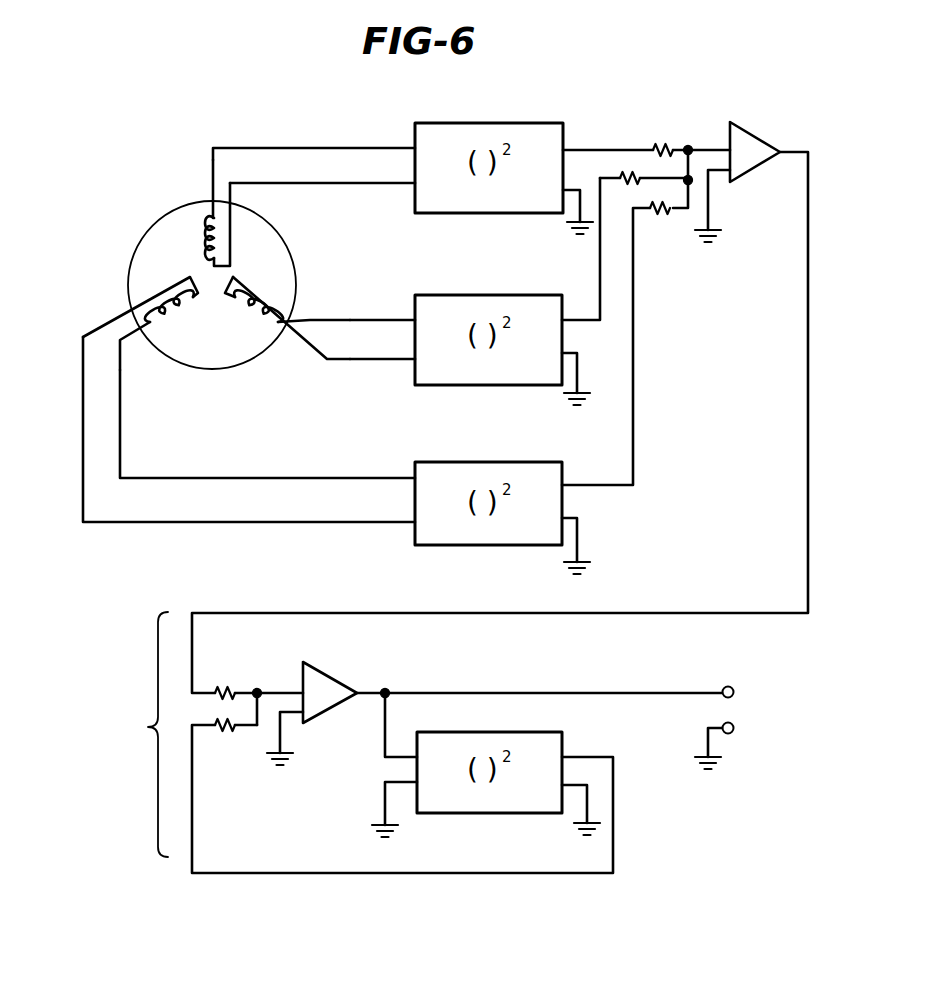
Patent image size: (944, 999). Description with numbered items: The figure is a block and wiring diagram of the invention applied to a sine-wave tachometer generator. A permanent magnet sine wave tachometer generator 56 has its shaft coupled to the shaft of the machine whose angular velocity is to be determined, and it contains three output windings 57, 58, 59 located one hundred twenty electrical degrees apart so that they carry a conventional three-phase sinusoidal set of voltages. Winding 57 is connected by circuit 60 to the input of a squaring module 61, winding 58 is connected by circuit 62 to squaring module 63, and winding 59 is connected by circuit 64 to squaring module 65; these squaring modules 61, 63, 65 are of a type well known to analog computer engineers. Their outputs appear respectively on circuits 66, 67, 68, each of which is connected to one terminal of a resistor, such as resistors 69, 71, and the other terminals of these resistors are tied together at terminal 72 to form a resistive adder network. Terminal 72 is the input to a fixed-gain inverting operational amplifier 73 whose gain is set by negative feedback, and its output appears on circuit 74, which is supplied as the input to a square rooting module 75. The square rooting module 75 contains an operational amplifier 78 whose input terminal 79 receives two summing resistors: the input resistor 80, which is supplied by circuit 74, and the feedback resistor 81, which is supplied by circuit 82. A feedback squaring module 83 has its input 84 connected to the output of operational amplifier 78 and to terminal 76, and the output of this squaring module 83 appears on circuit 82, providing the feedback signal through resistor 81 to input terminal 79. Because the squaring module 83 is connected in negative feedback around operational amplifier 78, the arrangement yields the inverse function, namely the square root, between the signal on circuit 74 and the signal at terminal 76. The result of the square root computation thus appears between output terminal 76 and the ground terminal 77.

The permanent magnet sine wave tachometer generator 56 is at (141, 247).
The winding 57 is at (203, 244).
The winding 58 is at (245, 323).
The winding 59 is at (170, 313).
The circuit 60 is at (342, 160).
The squaring module 61 is at (470, 105).
The circuit 62 is at (364, 348).
The squaring module 63 is at (468, 302).
The circuit 64 is at (380, 492).
The squaring module 65 is at (482, 468).
The circuit 66 is at (620, 147).
The circuit 67 is at (620, 176).
The circuit 68 is at (633, 320).
The resistor 69 is at (666, 145).
The resistor 71 is at (668, 222).
The terminal 72 is at (690, 148).
The fixed-gain inverting operational amplifier 73 is at (758, 135).
The circuit 74 is at (800, 148).
The square rooting module 75 is at (148, 727).
The terminal 76 is at (750, 676).
The ground terminal 77 is at (734, 732).
The operational amplifier 78 is at (328, 680).
The input terminal 79 is at (280, 690).
The input resistor 80 is at (226, 680).
The feedback resistor 81 is at (226, 740).
The circuit 82 is at (530, 875).
The feedback squaring module 83 is at (500, 742).
The input 84 is at (385, 745).